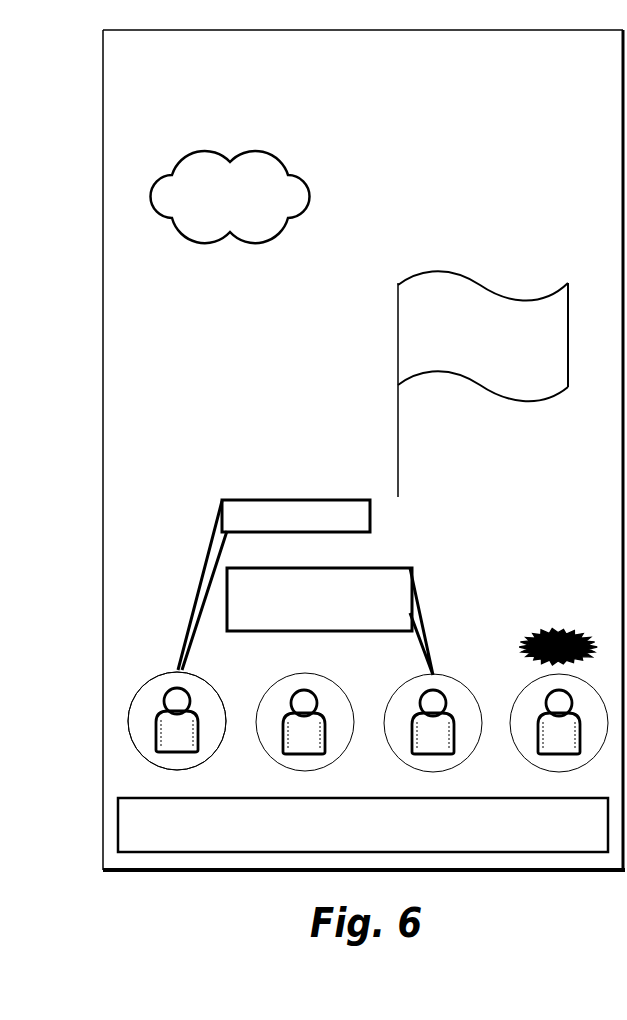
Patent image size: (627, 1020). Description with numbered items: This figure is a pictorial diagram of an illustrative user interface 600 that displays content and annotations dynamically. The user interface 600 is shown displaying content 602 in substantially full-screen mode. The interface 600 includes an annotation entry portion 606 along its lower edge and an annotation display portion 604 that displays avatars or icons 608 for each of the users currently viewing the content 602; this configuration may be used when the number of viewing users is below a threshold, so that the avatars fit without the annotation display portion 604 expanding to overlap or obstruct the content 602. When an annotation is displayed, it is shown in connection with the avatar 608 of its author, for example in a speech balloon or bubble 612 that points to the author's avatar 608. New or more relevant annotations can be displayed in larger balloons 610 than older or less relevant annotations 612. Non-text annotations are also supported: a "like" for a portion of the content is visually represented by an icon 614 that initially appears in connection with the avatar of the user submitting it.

The user interface 600 is at (200, 872).
The content 602 is at (113, 328).
The annotation display portion 604 is at (97, 703).
The annotation entry portion 606 is at (117, 827).
The avatar 608 is at (148, 677).
The larger balloon 610 is at (345, 632).
The speech balloon 612 is at (248, 497).
The icon 614 is at (532, 633).